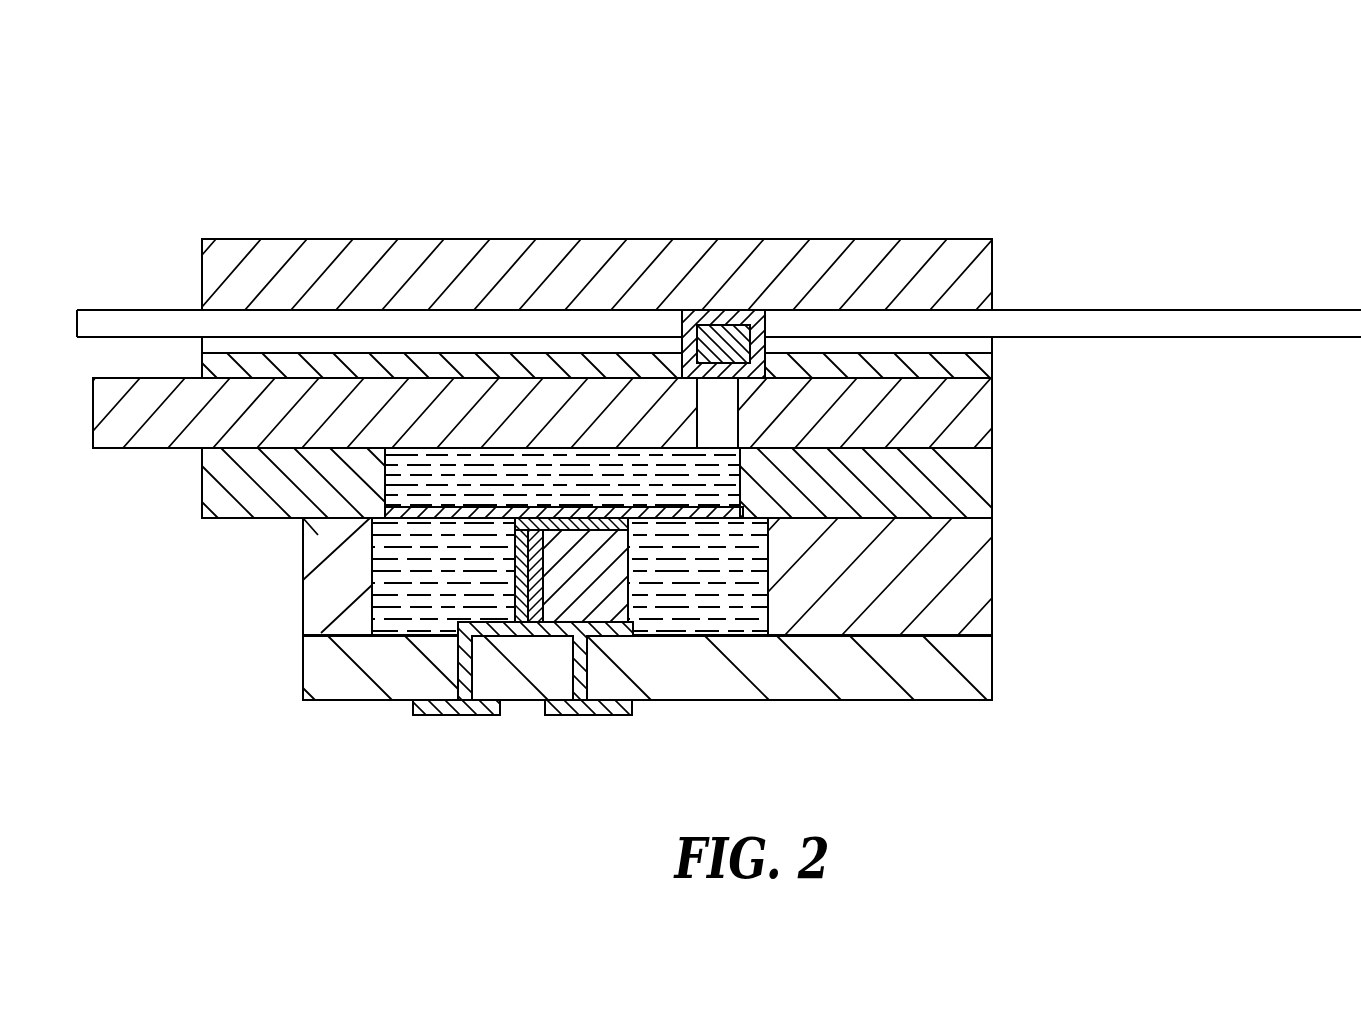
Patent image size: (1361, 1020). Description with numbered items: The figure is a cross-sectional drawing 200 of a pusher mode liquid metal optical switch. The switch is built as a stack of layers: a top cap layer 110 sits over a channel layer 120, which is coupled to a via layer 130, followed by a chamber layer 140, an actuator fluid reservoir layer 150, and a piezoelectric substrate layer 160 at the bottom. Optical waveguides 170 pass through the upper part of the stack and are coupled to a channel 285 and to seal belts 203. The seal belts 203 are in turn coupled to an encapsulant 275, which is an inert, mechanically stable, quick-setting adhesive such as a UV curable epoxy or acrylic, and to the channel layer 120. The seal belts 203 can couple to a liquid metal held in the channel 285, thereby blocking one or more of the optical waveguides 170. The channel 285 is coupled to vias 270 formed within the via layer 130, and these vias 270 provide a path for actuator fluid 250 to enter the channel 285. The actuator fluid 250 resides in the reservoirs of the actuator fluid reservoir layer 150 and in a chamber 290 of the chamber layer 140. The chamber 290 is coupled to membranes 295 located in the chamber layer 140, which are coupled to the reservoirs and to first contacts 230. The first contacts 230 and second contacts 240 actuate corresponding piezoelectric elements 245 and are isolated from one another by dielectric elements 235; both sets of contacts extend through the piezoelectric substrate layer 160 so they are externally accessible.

The cross-sectional drawing 200 is at (146, 82).
The top cap layer 110 is at (200, 268).
The channel layer 120 is at (992, 362).
The via layer 130 is at (93, 408).
The chamber layer 140 is at (202, 485).
The actuator fluid reservoir layer 150 is at (303, 577).
The piezoelectric substrate layer 160 is at (303, 675).
The optical waveguide 170 is at (122, 309).
The seal belt 203 is at (723, 340).
The first contact 230 is at (440, 717).
The dielectric element 235 is at (536, 585).
The second contact 240 is at (597, 717).
The piezoelectric element 245 is at (607, 562).
The actuator fluid 250 is at (417, 598).
The via 270 is at (702, 422).
The encapsulant 275 is at (945, 343).
The channel 285 is at (728, 330).
The chamber 290 is at (562, 445).
The membrane 295 is at (425, 505).